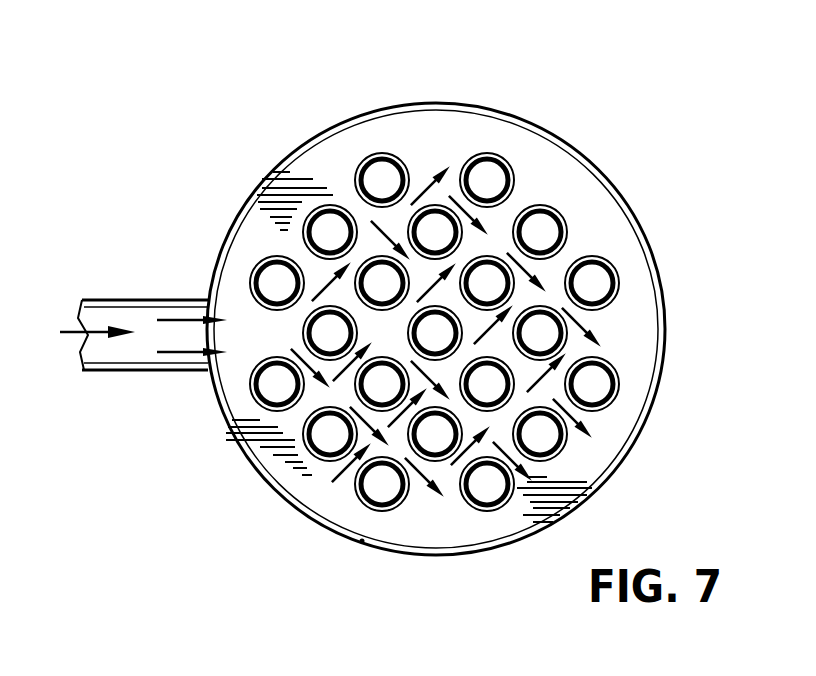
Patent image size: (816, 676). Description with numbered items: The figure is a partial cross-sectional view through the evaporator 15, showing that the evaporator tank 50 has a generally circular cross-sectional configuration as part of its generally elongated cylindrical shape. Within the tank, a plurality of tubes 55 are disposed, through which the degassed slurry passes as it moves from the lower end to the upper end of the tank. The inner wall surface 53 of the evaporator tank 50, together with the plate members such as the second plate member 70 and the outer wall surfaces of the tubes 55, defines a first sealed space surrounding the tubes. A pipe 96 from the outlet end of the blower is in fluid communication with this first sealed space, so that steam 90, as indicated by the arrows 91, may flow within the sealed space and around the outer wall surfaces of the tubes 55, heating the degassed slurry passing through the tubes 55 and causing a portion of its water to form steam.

The evaporator 15 is at (287, 535).
The evaporator tank 50 is at (636, 213).
The inner wall surface 53 is at (362, 543).
The tubes 55 is at (510, 168).
The second plate member 70 is at (605, 452).
The steam 90 is at (137, 350).
The arrows 91 is at (432, 170).
The pipe 96 is at (140, 300).